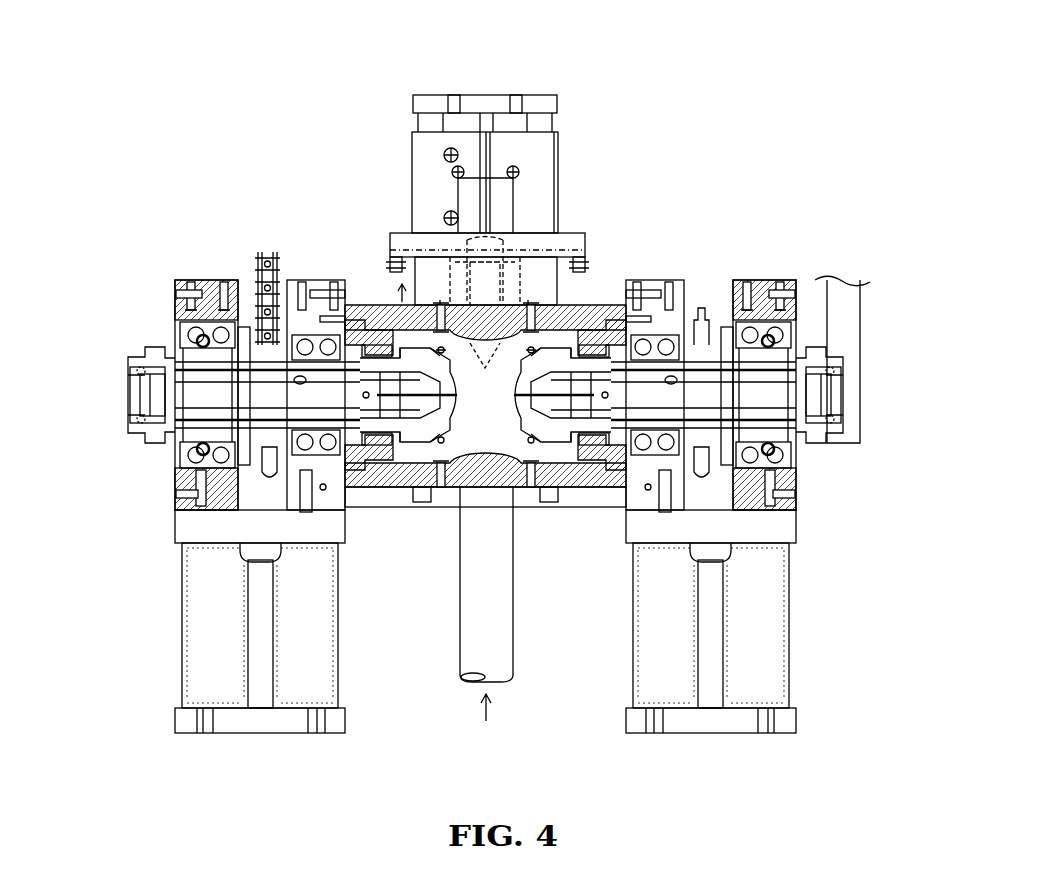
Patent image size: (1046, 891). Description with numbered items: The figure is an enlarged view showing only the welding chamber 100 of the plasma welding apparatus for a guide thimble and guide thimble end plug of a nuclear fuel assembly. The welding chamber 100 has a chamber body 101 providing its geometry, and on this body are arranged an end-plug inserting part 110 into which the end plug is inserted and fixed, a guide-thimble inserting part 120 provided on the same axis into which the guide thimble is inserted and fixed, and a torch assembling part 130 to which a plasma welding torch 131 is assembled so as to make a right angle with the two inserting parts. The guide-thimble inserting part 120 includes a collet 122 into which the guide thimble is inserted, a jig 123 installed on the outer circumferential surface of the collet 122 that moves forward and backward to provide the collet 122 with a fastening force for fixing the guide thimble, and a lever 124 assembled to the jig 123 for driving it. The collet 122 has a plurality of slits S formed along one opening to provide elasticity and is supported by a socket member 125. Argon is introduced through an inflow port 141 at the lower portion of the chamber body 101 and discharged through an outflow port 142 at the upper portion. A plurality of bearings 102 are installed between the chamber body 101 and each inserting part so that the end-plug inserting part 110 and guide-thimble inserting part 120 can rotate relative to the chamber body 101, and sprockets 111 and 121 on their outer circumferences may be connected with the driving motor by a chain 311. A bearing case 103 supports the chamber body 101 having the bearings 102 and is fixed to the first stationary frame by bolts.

The welding chamber 100 is at (356, 93).
The chamber body 101 is at (212, 280).
The bearings 102 is at (192, 458).
The bearing case 103 is at (197, 628).
The end-plug inserting part 110 is at (367, 362).
The sprocket 111 is at (178, 507).
The guide-thimble inserting part 120 is at (625, 335).
The sprocket 121 is at (707, 478).
The collet 122 is at (533, 443).
The jig 123 is at (797, 340).
The lever 124 is at (848, 320).
The socket member 125 is at (553, 350).
The torch assembling part 130 is at (548, 162).
The plasma welding torch 131 is at (585, 265).
The argon inflow port 141 is at (488, 498).
The argon outflow port 142 is at (352, 320).
The chain 311 is at (262, 255).
The slits S is at (530, 396).